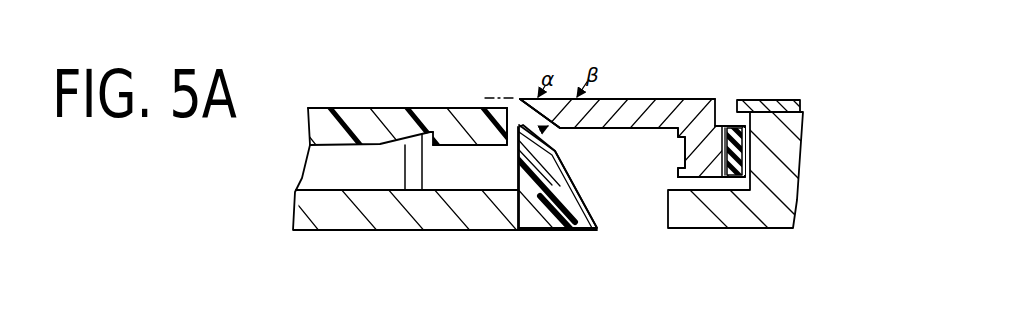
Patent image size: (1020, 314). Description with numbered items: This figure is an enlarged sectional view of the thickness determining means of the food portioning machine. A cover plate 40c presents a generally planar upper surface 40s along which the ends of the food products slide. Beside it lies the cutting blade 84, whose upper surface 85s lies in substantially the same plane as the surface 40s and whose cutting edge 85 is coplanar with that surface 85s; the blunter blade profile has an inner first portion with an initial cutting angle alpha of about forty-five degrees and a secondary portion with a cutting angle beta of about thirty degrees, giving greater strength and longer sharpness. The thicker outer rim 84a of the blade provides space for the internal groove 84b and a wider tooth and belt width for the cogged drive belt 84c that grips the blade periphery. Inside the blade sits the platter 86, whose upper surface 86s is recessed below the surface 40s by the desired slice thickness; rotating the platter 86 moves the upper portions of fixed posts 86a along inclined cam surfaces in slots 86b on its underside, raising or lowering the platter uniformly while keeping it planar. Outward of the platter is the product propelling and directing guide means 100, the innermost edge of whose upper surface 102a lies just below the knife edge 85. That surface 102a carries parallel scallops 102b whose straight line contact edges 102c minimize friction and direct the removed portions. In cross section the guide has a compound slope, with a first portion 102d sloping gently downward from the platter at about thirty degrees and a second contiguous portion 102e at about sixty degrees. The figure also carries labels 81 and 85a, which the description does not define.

The cover plate 40c is at (798, 109).
The upper surface of cover plate 40s is at (780, 99).
The gap 81 is at (558, 129).
The cutting blade 84 is at (644, 112).
The thicker outer rim 84a is at (693, 120).
The internal groove 84b is at (678, 153).
The cogged drive belt 84c is at (729, 127).
The cutting edge 85 is at (555, 97).
The beveled surface 85a is at (526, 113).
The upper surface of blade 85s is at (615, 98).
The platter 86 is at (453, 108).
The support posts 86a is at (411, 155).
The slots 86b is at (408, 108).
The upper surface of platter 86s is at (430, 108).
The product propelling and directing guide means 100 is at (576, 250).
The upper surface of guide means 102a is at (507, 146).
The scallops 102b is at (583, 212).
The straight line contact edges 102c is at (582, 193).
The first portion of shoe 102d is at (516, 172).
The second portion of shoe 102e is at (558, 200).